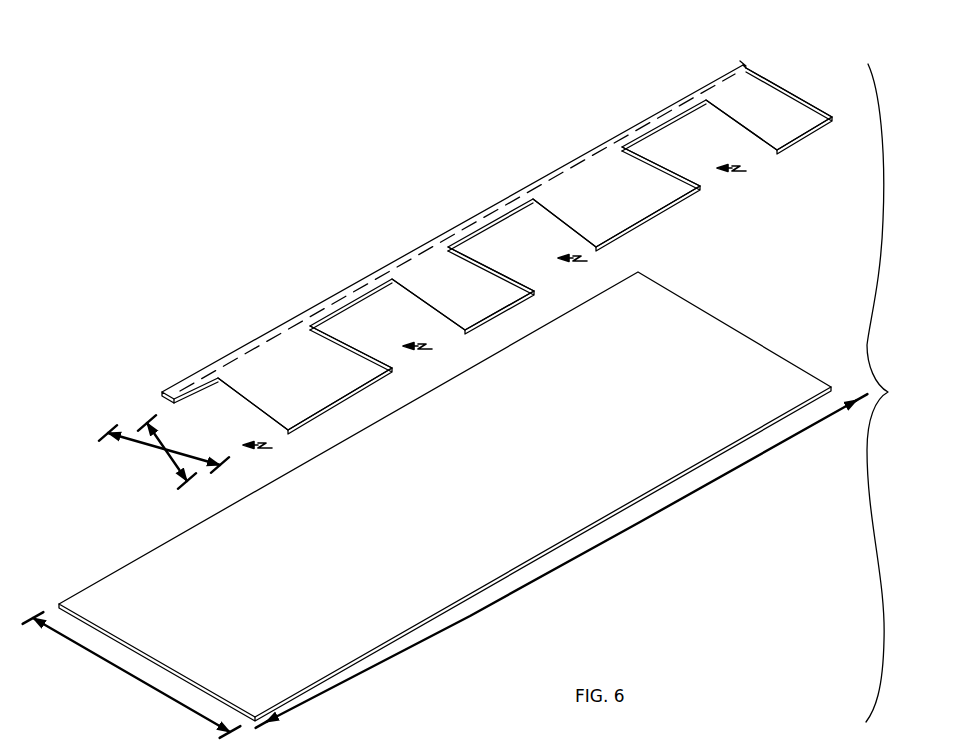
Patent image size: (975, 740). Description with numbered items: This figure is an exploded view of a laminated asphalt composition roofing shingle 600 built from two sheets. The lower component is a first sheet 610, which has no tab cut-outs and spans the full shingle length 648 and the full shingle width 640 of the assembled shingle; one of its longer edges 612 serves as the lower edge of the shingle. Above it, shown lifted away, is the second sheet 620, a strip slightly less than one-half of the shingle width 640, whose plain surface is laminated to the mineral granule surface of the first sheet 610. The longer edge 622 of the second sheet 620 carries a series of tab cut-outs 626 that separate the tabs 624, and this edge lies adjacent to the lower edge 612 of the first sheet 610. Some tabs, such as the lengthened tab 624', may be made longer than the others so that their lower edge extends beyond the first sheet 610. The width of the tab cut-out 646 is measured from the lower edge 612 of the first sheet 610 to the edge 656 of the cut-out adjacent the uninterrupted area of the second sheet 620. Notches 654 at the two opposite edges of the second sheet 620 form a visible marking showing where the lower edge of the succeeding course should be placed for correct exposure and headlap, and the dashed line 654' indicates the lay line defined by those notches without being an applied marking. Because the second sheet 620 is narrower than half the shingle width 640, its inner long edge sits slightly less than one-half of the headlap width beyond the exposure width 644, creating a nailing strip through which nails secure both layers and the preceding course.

The laminated asphalt composition roofing shingle 600 is at (897, 393).
The first sheet 610 is at (445, 479).
The longer edge of the first sheet 612 is at (481, 590).
The second sheet 620 is at (496, 222).
The longer edge of the second sheet 622 is at (371, 386).
The tab 624 is at (533, 251).
The lengthened tab 624' is at (474, 287).
The tab cut-out 626 is at (514, 307).
The shingle width 640 is at (126, 673).
The exposure width 644 is at (170, 462).
The width of the tab cut-out 646 is at (150, 432).
The shingle length 648 is at (566, 562).
The visible marking (notches) 654 is at (446, 207).
The dashed line (lay line) 654' is at (452, 228).
The edge of the tab cut-out 656 is at (337, 308).